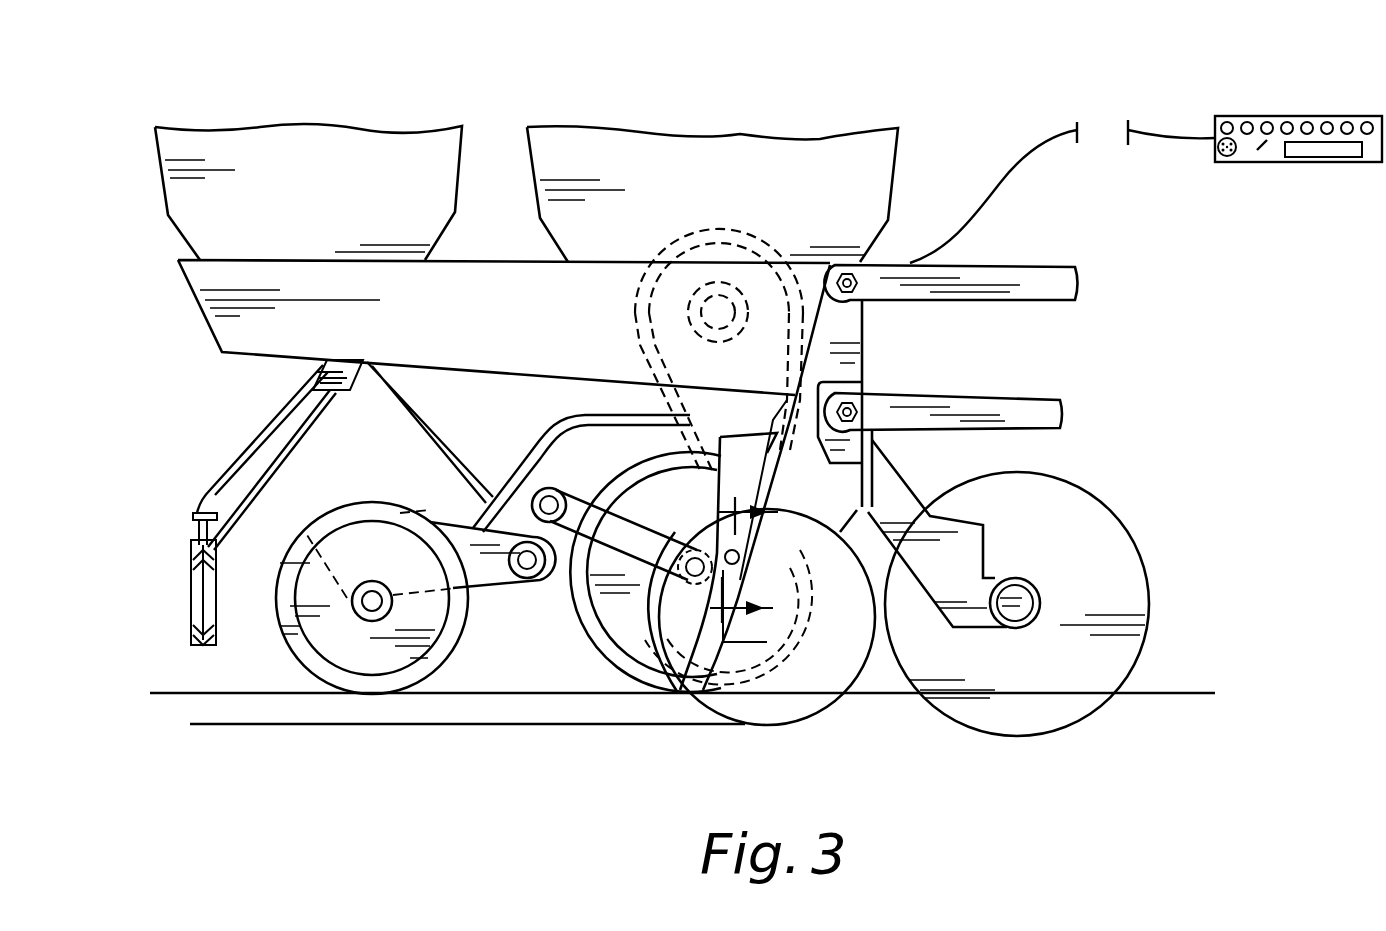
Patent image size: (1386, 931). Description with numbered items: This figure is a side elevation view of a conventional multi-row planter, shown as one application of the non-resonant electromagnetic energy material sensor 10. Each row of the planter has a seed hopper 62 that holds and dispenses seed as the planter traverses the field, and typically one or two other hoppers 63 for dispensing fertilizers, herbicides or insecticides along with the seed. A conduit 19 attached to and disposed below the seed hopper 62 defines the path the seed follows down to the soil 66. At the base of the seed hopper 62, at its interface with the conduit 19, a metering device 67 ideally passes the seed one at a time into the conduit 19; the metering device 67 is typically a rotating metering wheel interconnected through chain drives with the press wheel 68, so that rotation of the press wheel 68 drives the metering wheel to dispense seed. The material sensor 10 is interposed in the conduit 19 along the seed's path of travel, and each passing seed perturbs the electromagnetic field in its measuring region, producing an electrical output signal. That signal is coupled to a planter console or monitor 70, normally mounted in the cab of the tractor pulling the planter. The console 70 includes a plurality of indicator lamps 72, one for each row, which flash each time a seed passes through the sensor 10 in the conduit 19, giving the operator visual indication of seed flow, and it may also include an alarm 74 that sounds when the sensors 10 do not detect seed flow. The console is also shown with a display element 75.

The material sensor 10 is at (764, 591).
The conduit 19 is at (700, 653).
The seed hopper 62 is at (718, 178).
The hopper 63 is at (306, 178).
The soil 66 is at (495, 724).
The metering device 67 is at (640, 320).
The press wheel 68 is at (607, 623).
The planter console or monitor 70 is at (1287, 135).
The indicator lamps 72 is at (1267, 120).
The alarm 74 is at (1232, 158).
The display 75 is at (1310, 148).